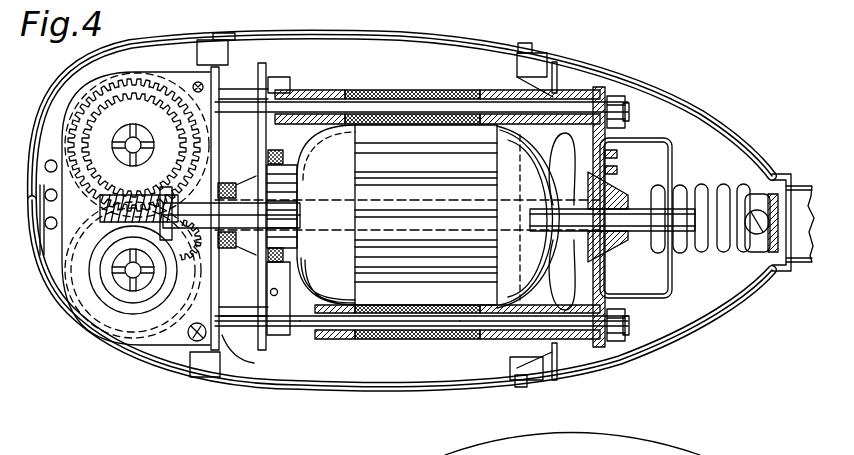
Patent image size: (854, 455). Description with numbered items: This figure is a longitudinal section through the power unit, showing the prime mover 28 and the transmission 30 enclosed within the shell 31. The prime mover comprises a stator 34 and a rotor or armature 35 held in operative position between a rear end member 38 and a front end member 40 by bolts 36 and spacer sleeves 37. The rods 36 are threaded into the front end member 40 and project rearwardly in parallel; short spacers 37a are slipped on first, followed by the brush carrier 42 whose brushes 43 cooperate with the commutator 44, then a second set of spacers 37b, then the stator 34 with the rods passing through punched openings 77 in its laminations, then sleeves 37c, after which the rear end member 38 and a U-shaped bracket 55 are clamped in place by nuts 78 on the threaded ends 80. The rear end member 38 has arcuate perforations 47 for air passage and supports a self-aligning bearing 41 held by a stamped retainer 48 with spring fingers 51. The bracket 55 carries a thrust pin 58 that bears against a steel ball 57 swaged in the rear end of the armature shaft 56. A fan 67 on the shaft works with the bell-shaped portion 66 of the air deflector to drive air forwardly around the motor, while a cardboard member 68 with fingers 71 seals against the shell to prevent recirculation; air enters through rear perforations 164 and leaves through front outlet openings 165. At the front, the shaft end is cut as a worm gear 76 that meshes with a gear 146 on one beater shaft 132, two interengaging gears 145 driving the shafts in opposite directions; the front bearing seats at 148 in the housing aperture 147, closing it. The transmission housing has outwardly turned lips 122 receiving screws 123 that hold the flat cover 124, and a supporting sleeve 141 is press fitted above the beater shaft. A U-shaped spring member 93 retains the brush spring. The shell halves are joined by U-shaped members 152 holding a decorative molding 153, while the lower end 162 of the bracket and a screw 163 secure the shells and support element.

The prime mover 28 is at (392, 343).
The transmission 30 is at (125, 347).
The shell 31 is at (443, 393).
The stator 34 is at (390, 100).
The rotor or armature 35 is at (387, 265).
The bolts 36 is at (600, 78).
The spacer sleeves 37 is at (253, 90).
The spacers 37a is at (238, 333).
The second set of spacers 37b is at (307, 332).
The sleeves 37c is at (510, 343).
The rear end member 38 is at (620, 137).
The front end member 40 is at (234, 332).
The bearing 41 is at (633, 196).
The brush carrier 42 is at (273, 345).
The brushes 43 is at (285, 173).
The commutator 44 is at (300, 153).
The arcuate perforations 47 is at (607, 156).
The stamped retainer 48 is at (605, 172).
The spring fingers 51 is at (613, 257).
The U-shaped bracket 55 is at (665, 213).
The armature shaft 56 is at (640, 250).
The steel ball 57 is at (668, 210).
The thrust pin 58 is at (680, 197).
The bell-shaped portion 66 is at (512, 88).
The fan 67 is at (563, 347).
The cardboard member 68 is at (558, 92).
The fingers 71 is at (580, 97).
The worm gear 76 is at (218, 93).
The openings 77 is at (448, 100).
The nuts 78 is at (618, 100).
The threaded ends 80 is at (633, 347).
The U-shaped spring member 93 is at (266, 340).
The outwardly turned lips 122 is at (183, 75).
The screws 123 is at (187, 337).
The flat cover 124 is at (96, 318).
The beater shaft 132 is at (123, 136).
The supporting sleeve 141 is at (100, 292).
The interengaging gears 145 is at (107, 214).
The gear 146 is at (148, 107).
The aperture 147 is at (192, 252).
The bearing seat 148 is at (207, 187).
The U-shaped members 152 is at (212, 33).
The decorative molding 153 is at (402, 36).
The lower end of bracket 162 is at (758, 287).
The screw 163 is at (743, 303).
The perforations 164 is at (722, 188).
The outlet openings 165 is at (53, 160).